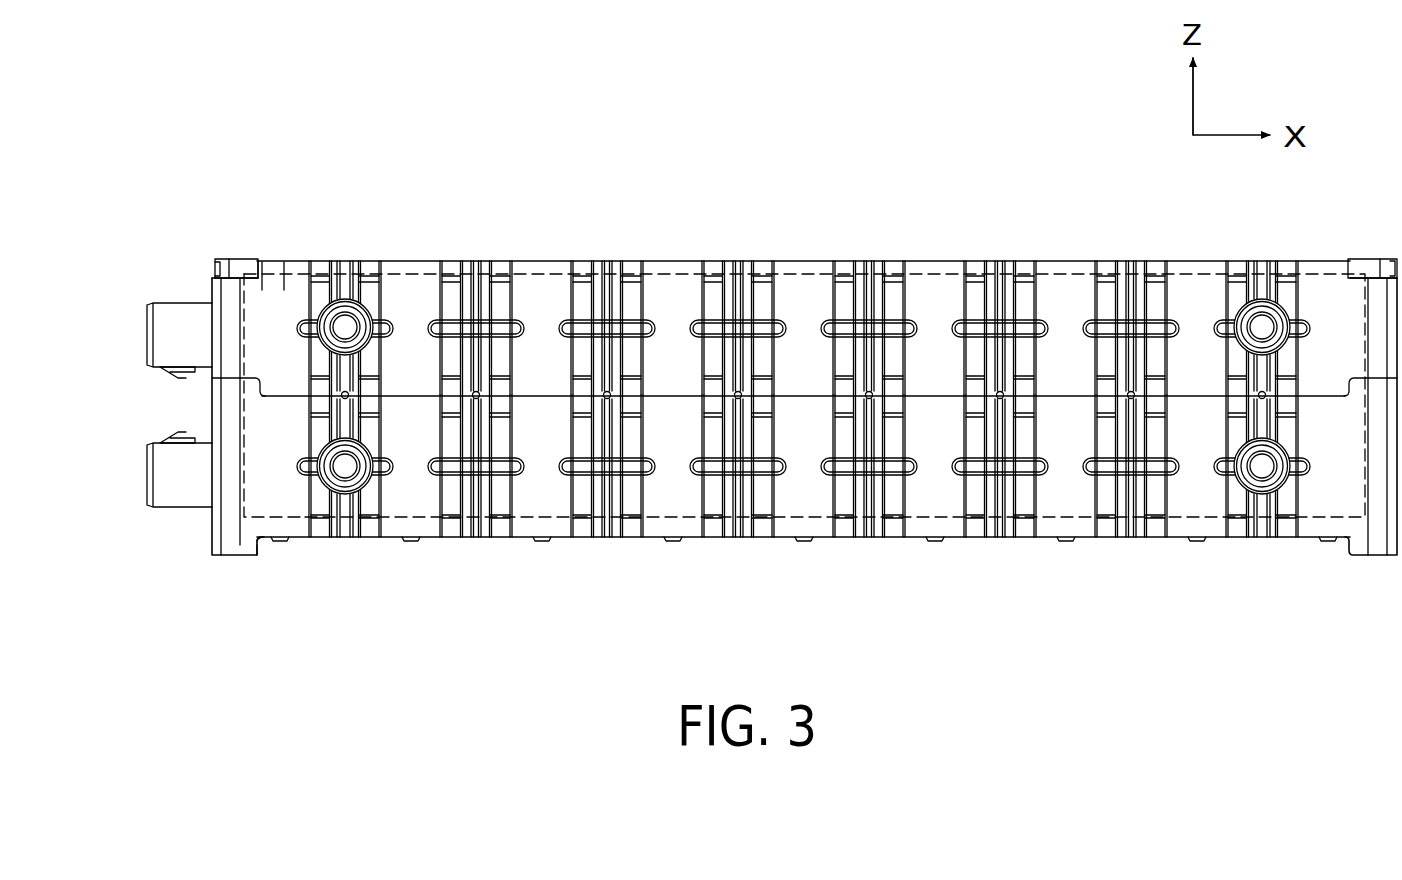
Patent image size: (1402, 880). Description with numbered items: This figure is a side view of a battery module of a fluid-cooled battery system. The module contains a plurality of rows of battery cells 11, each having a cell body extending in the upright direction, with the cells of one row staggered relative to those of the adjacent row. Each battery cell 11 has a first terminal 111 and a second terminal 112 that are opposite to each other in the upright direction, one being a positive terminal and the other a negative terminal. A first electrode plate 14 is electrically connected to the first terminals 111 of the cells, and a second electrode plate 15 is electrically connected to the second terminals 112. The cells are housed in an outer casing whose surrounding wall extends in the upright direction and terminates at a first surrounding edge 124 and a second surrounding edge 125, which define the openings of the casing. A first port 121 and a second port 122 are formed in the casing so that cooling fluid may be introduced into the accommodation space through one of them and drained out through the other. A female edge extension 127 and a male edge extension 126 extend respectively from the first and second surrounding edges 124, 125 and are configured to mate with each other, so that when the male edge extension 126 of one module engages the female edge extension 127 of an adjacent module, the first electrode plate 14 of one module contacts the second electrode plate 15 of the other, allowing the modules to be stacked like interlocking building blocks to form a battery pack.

The battery cell 11 is at (1070, 490).
The first terminal 111 is at (1067, 278).
The second terminal 112 is at (943, 517).
The first port 121 is at (141, 465).
The second port 122 is at (141, 327).
The first surrounding edge 124 is at (278, 278).
The second surrounding edge 125 is at (268, 539).
The male edge extension 126 is at (213, 553).
The female edge extension 127 is at (237, 267).
The first electrode plate 14 is at (417, 270).
The second electrode plate 15 is at (252, 522).